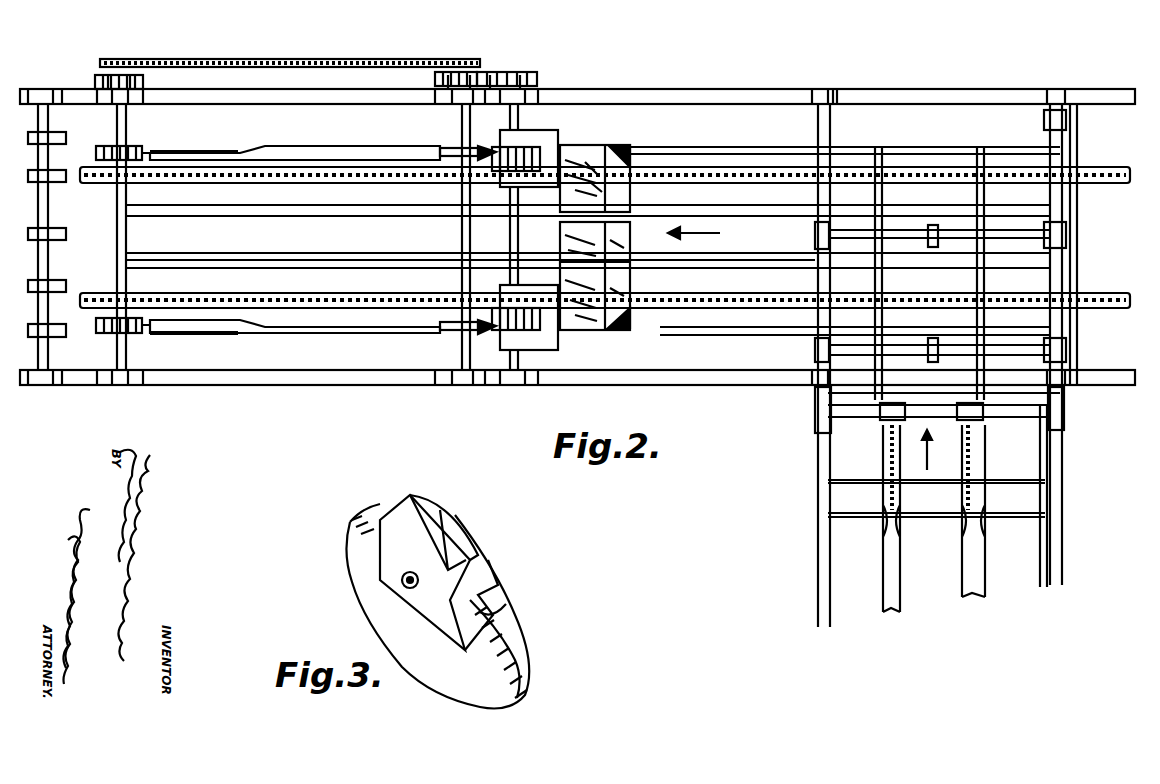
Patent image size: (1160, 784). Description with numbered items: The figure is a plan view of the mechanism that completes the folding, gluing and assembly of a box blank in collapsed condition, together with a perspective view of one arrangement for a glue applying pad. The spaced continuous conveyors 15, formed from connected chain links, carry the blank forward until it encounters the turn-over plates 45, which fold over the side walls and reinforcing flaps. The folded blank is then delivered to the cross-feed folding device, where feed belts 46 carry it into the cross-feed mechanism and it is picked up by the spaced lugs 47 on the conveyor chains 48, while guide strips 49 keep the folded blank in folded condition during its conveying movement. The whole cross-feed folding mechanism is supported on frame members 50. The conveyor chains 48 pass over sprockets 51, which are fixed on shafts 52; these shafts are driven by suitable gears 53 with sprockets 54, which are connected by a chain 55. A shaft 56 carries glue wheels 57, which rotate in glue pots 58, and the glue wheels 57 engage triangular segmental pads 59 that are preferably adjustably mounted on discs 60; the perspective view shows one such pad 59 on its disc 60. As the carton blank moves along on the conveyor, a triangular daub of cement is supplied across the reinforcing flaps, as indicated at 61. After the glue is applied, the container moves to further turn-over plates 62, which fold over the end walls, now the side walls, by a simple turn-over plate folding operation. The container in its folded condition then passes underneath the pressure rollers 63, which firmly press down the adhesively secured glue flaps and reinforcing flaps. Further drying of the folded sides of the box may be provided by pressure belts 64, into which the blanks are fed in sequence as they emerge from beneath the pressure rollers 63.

In FIG. 2, the continuous conveyors 15 is at (884, 446).
In FIG. 2, the turn-over plates 45 is at (888, 562).
In FIG. 2, the feed belts 46 is at (881, 214).
In FIG. 2, the spaced lugs 47 is at (935, 184).
In FIG. 2, the conveyor chains 48 is at (960, 188).
In FIG. 2, the guide strips 49 is at (900, 147).
In FIG. 2, the frame members 50 is at (643, 111).
In FIG. 2, the sprockets 51 is at (83, 165).
In FIG. 2, the shafts 52 is at (128, 145).
In FIG. 2, the gears 53 is at (95, 77).
In FIG. 2, the sprockets 54 is at (108, 68).
In FIG. 2, the chain 55 is at (310, 58).
In FIG. 2, the shaft 56 is at (520, 118).
In FIG. 2, the glue wheels 57 is at (540, 147).
In FIG. 2, the glue pots 58 is at (560, 182).
In FIG. 2, the triangular segmental pads 59 is at (484, 143).
In FIG. 3, the triangular segmental pads 59 is at (450, 522).
In FIG. 2, the discs 60 is at (440, 148).
In FIG. 3, the discs 60 is at (520, 700).
In FIG. 2, the triangular daub of cement 61 is at (625, 145).
In FIG. 2, the turn-over plates 62 is at (290, 146).
In FIG. 2, the pressure rollers 63 is at (152, 150).
In FIG. 2, the pressure belts 64 is at (60, 186).